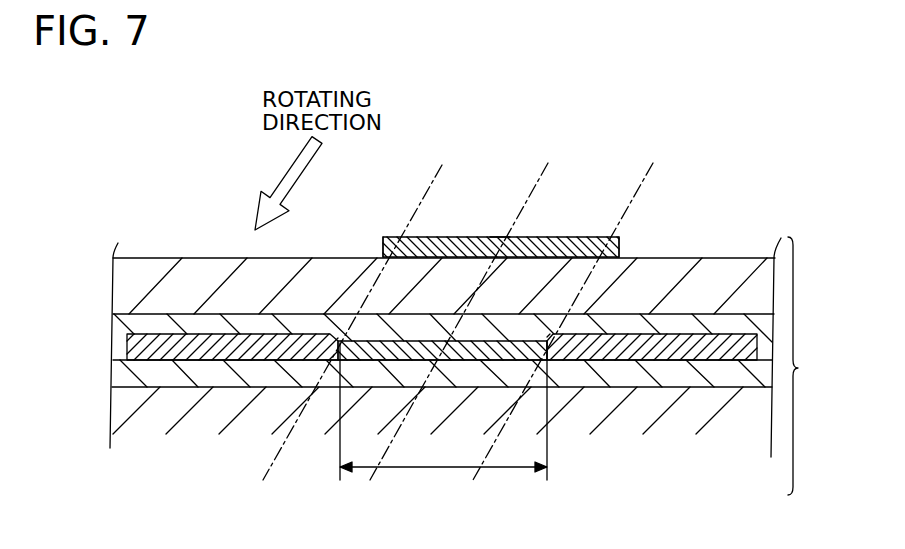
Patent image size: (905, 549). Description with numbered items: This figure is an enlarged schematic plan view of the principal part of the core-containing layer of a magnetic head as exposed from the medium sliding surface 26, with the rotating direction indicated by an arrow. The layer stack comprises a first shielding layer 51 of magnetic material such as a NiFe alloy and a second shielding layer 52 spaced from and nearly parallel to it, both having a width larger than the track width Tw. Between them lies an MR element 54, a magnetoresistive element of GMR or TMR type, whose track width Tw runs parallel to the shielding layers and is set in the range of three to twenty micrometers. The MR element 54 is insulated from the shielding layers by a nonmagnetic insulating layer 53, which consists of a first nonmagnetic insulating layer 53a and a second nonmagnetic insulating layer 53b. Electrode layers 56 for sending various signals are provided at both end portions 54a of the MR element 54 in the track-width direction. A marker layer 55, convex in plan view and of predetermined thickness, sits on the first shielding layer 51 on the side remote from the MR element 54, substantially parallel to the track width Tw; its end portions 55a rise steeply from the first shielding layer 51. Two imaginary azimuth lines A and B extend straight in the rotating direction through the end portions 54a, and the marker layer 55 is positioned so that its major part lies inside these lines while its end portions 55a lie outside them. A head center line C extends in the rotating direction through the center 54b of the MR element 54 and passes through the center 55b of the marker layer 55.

The medium sliding surface 26 is at (808, 366).
The first shielding layer 51 is at (741, 268).
The second shielding layer 52 is at (713, 410).
The nonmagnetic insulating layer 53 is at (130, 190).
The first nonmagnetic insulating layer 53a is at (113, 328).
The second nonmagnetic insulating layer 53b is at (118, 372).
The MR element 54 is at (330, 362).
The end portions of the MR element 54a is at (336, 348).
The center of the MR element 54b is at (446, 357).
The marker layer 55 is at (557, 237).
The end portions of the marker layer 55a is at (383, 240).
The center of the marker layer 55b is at (499, 234).
The electrode layers 56 is at (211, 333).
The imaginary azimuth line A is at (355, 308).
The imaginary azimuth line B is at (566, 307).
The head center line C is at (462, 308).
The track width Tw is at (443, 420).